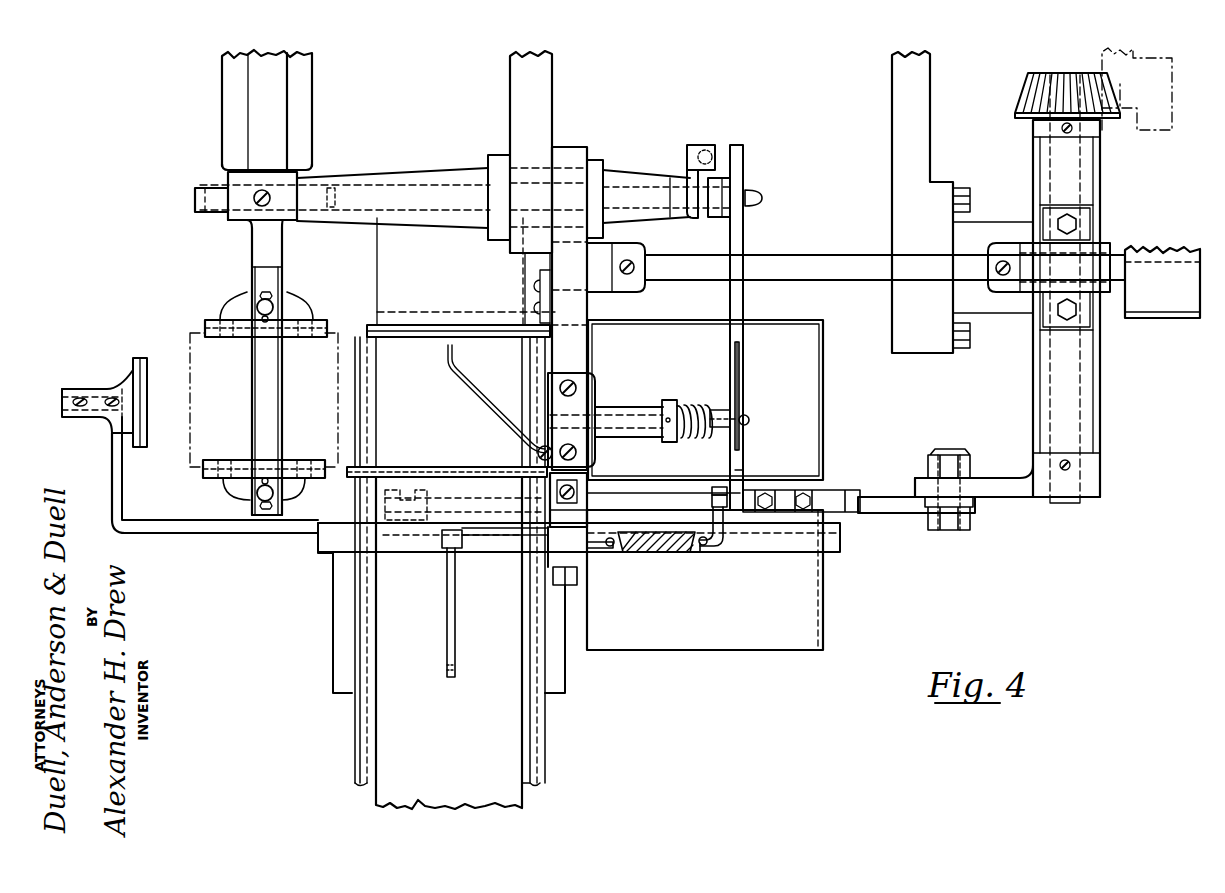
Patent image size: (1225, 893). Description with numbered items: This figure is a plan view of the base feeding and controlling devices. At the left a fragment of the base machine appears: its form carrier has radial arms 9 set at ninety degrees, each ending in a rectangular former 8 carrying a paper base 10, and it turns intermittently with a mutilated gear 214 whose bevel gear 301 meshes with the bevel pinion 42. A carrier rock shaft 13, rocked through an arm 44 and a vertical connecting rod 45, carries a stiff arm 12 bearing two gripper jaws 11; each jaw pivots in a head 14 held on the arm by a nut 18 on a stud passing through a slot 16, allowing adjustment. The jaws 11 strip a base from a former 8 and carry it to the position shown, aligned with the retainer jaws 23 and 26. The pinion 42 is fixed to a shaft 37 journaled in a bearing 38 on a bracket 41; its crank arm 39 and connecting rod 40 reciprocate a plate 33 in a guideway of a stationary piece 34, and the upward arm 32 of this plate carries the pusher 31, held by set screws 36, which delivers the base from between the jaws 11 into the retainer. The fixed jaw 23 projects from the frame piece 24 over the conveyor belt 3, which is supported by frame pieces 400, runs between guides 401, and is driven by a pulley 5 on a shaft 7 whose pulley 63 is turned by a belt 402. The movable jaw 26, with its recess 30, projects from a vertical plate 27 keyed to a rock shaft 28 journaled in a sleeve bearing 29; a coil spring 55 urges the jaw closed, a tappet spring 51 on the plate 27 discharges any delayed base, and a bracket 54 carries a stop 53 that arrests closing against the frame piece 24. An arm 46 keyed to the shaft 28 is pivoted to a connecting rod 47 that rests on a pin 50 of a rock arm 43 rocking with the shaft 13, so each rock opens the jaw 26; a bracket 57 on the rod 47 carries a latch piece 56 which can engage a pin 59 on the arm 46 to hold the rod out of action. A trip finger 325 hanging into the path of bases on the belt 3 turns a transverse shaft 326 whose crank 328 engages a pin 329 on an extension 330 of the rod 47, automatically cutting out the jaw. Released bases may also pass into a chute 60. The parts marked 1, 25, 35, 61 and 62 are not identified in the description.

The frame column 1 is at (922, 86).
The conveyor belt 3 is at (579, 643).
The pulley 5 is at (377, 310).
The shaft 7 is at (828, 258).
The former 8 is at (210, 213).
The radial arms 9 is at (312, 101).
The paper base 10 is at (190, 343).
The gripper jaws 11 is at (240, 338).
The arm 12 is at (255, 393).
The carrier rock shaft 13 is at (280, 178).
The head 14 is at (242, 300).
The slot 16 is at (274, 290).
The nut 18 is at (274, 305).
The retainer jaw 23 is at (480, 324).
The frame projection 24 is at (578, 152).
The dashed connection line 25 is at (557, 325).
The detainer jaw 26 is at (410, 472).
The vertical plate 27 is at (544, 393).
The rock shaft 28 is at (648, 410).
The sleeve bearing 29 is at (600, 420).
The recess 30 is at (445, 472).
The pusher 31 is at (147, 408).
The arm 32 is at (120, 518).
The plate 33 is at (651, 548).
The stationary piece 34 is at (692, 550).
The pin 35 is at (590, 556).
The set screws 36 is at (112, 398).
The shaft 37 is at (1066, 504).
The bearing 38 is at (1040, 383).
The crank arm 39 is at (1010, 500).
The connecting rod 40 is at (893, 498).
The bracket 41 is at (1013, 228).
The bevel pinion 42 is at (1067, 72).
The rock arm 43 is at (726, 210).
The arm 44 is at (686, 172).
The vertical connecting rod 45 is at (705, 148).
The arm 46 is at (722, 410).
The connecting rod 47 is at (730, 297).
The pin 50 is at (762, 198).
The tappet spring 51 is at (478, 400).
The stop 53 is at (582, 485).
The bracket 54 is at (570, 520).
The coil spring 55 is at (693, 440).
The latch piece 56 is at (739, 384).
The bracket 57 is at (739, 353).
The pin 59 is at (749, 420).
The chute 60 is at (818, 430).
The hub 61 is at (1003, 246).
The bearing block 62 is at (600, 288).
The belt pulley 63 is at (1157, 220).
The mutilated gear wheel 214 is at (1170, 130).
The bevel gear 301 is at (1118, 72).
The trip finger 325 is at (456, 610).
The transverse shaft 326 is at (606, 548).
The crank 328 is at (712, 490).
The pin 329 is at (712, 503).
The extension 330 is at (745, 472).
The frame pieces 400 is at (365, 783).
The guides 401 is at (352, 731).
The belt 402 is at (1165, 258).